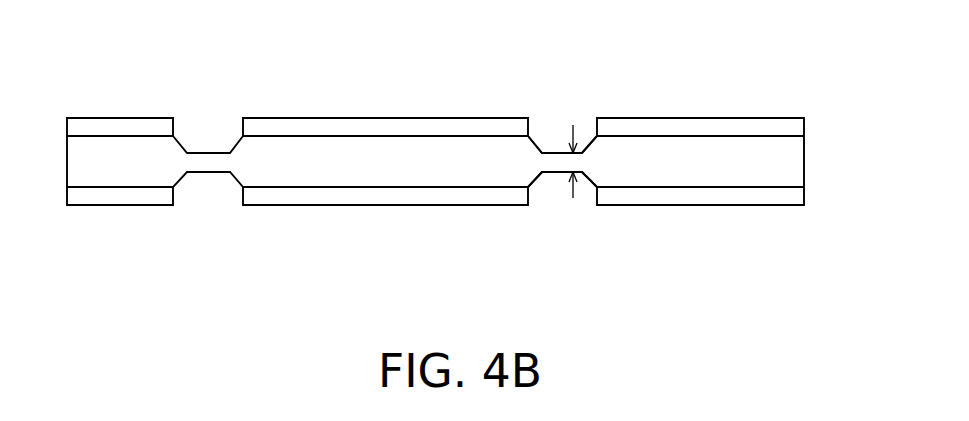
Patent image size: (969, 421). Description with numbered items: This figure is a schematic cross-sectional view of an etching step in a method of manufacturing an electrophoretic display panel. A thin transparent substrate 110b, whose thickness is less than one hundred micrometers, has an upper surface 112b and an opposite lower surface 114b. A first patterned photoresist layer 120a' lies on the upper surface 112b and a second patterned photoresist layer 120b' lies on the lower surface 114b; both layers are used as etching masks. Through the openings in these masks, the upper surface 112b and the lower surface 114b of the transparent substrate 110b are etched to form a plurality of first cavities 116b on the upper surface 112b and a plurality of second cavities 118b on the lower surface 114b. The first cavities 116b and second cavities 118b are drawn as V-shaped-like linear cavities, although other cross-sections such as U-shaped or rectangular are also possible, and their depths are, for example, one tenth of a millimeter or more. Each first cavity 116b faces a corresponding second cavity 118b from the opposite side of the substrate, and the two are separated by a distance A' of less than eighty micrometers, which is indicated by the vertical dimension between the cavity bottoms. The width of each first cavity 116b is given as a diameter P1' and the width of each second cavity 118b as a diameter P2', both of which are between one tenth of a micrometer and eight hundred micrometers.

The transparent substrate 110b is at (790, 160).
The first patterned photoresist layer 120a' is at (473, 124).
The second patterned photoresist layer 120b' is at (473, 193).
The upper surface 112b is at (683, 135).
The lower surface 114b is at (683, 188).
The first cavity 116b is at (534, 138).
The second cavity 118b is at (533, 180).
The diameter of first cavity P1' is at (208, 122).
The diameter of second cavity P2' is at (208, 202).
The distance A' is at (594, 187).